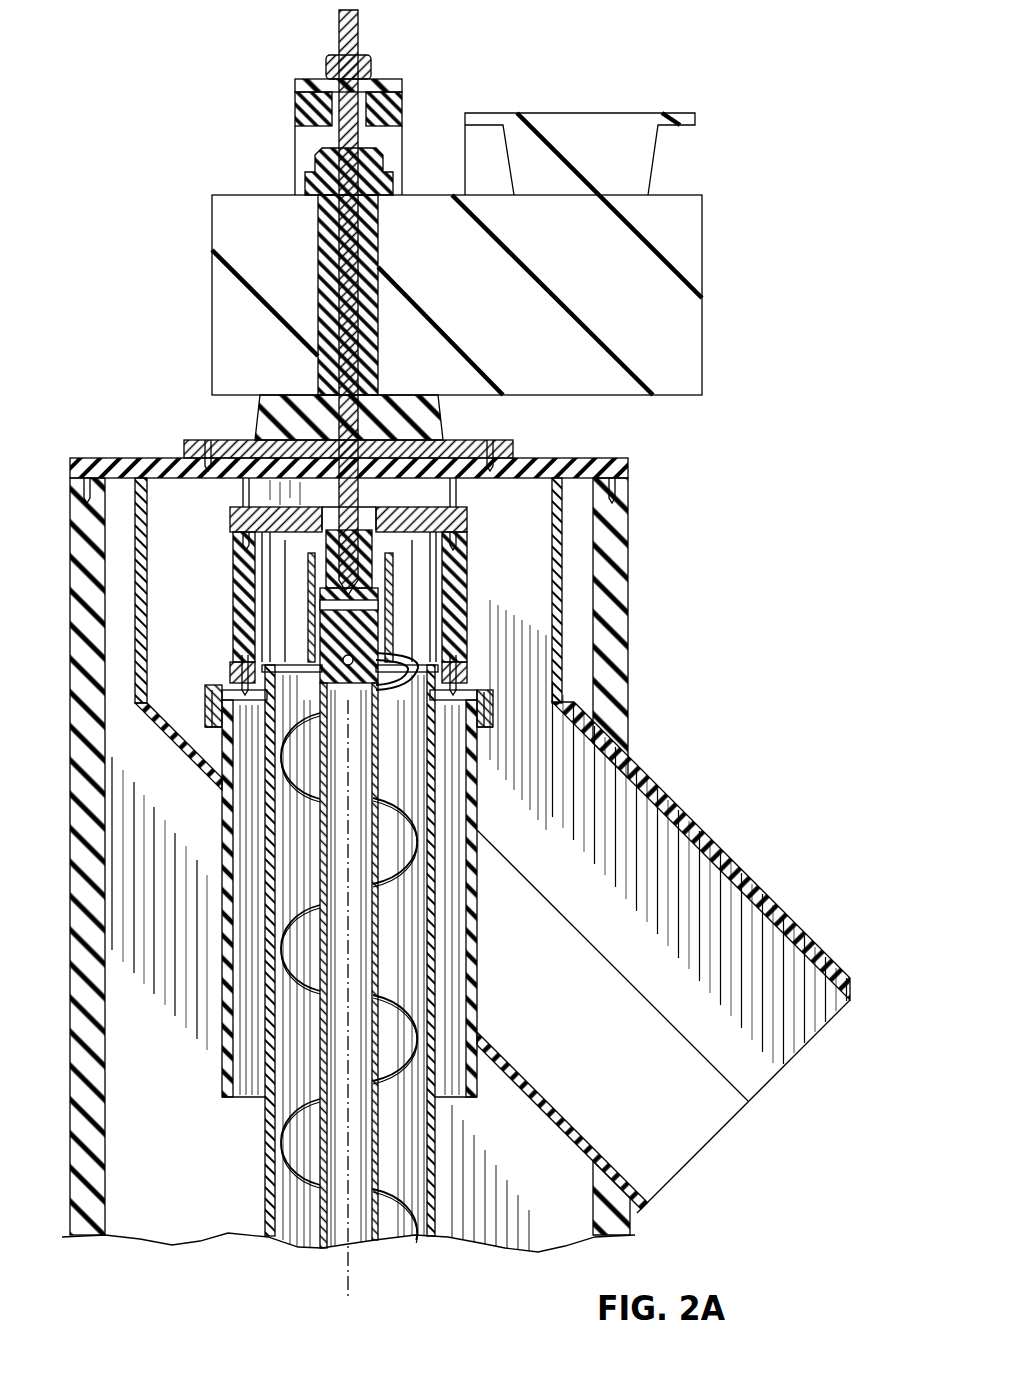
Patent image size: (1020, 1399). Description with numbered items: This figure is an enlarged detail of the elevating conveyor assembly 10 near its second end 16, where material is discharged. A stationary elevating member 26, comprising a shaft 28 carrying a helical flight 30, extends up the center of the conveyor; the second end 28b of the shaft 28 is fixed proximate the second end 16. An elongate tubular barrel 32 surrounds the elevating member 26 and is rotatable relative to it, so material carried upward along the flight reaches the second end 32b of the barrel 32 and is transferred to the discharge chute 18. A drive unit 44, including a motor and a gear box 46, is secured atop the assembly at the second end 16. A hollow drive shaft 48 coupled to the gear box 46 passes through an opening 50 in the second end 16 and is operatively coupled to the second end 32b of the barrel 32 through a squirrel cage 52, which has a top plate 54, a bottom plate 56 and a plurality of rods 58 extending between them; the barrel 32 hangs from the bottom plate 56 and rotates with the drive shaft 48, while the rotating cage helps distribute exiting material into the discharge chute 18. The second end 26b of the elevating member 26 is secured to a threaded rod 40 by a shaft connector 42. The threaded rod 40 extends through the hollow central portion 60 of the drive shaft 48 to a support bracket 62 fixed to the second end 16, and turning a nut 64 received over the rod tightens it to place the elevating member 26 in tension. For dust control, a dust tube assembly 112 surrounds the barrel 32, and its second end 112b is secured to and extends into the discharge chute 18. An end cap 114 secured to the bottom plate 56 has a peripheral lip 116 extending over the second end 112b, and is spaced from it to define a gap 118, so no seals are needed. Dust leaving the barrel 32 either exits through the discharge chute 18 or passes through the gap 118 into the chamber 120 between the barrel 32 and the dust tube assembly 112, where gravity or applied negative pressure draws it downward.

The elevating conveyor assembly 10 is at (116, 110).
The second end 16 is at (112, 457).
The discharge chute 18 is at (762, 904).
The elevating member 26 is at (318, 1045).
The second end of the elevating member 26b is at (482, 800).
The shaft 28 is at (382, 1126).
The second end of the shaft 28b is at (380, 618).
The helical flight 30 is at (290, 1148).
The barrel 32 is at (470, 974).
The second end of the barrel 32b is at (492, 682).
The threaded rod 40 is at (339, 16).
The shaft connector 42 is at (333, 633).
The drive unit 44 is at (704, 251).
The gear box 46 is at (212, 222).
The drive shaft 48 is at (318, 236).
The opening 50 is at (362, 456).
The squirrel cage 52 is at (470, 536).
The top plate 54 is at (262, 507).
The bottom plate 56 is at (230, 668).
The rods 58 is at (233, 565).
The hollow central portion 60 is at (357, 233).
The support bracket 62 is at (402, 86).
The nut 64 is at (326, 63).
The dust tube assembly 112 is at (479, 934).
The second end of the dust tube assembly 112b is at (220, 766).
The end cap 114 is at (497, 668).
The peripheral lip 116 is at (497, 698).
The gap 118 is at (214, 729).
The chamber 120 is at (255, 1020).